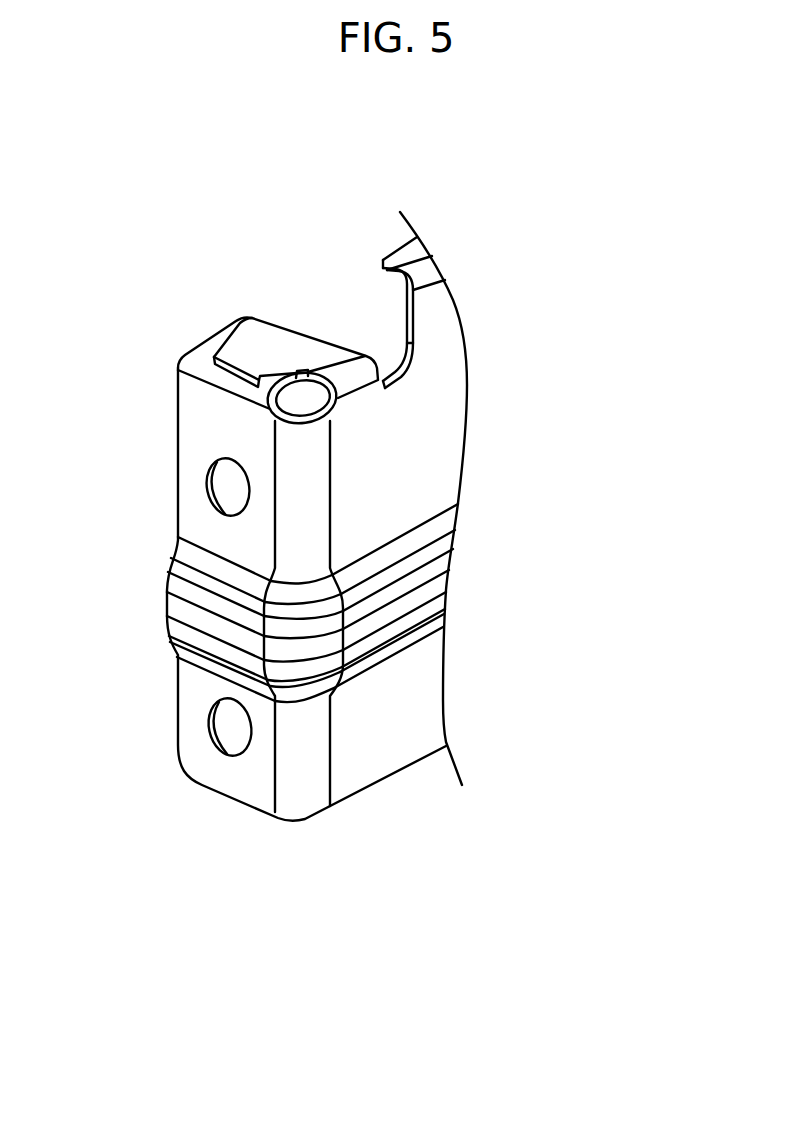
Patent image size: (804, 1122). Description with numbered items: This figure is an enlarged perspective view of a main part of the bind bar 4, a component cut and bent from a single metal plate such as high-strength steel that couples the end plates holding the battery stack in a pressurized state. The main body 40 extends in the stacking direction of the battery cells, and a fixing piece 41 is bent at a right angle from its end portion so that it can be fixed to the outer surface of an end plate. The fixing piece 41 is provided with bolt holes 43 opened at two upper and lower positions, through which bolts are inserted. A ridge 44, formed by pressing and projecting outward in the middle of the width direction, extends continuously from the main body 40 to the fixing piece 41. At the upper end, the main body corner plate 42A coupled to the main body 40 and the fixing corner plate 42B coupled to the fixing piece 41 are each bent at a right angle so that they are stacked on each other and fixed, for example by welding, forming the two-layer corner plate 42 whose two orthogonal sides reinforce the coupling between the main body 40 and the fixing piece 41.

The bind bar 4 is at (317, 858).
The main body 40 is at (398, 443).
The fixing piece 41 is at (193, 522).
The corner plate 42 is at (353, 199).
The main body corner plate 42A is at (280, 340).
The fixing corner plate 42B is at (228, 328).
The bolt hole 43 is at (207, 482).
The ridge 44 is at (383, 618).